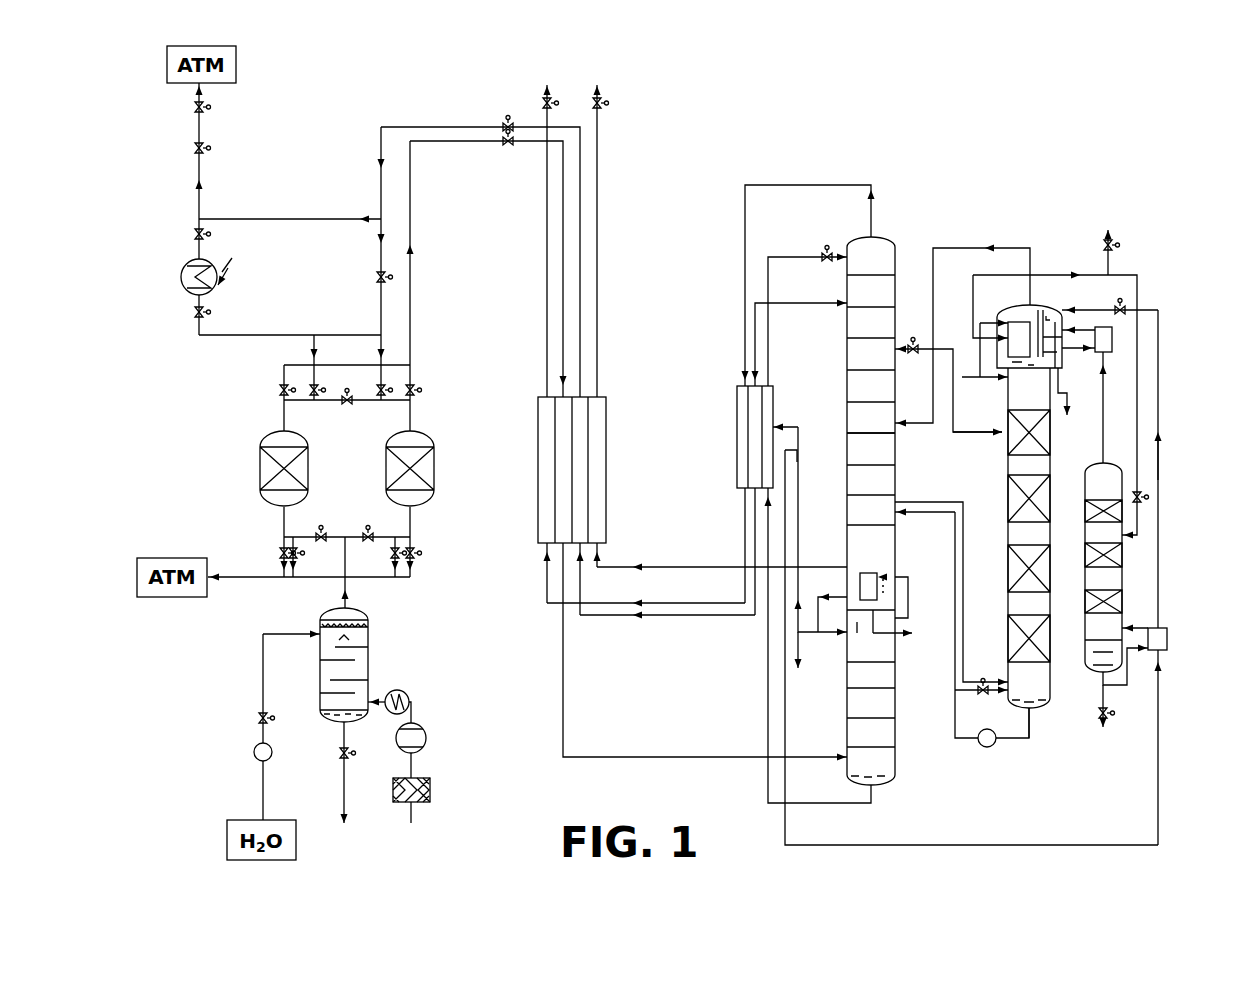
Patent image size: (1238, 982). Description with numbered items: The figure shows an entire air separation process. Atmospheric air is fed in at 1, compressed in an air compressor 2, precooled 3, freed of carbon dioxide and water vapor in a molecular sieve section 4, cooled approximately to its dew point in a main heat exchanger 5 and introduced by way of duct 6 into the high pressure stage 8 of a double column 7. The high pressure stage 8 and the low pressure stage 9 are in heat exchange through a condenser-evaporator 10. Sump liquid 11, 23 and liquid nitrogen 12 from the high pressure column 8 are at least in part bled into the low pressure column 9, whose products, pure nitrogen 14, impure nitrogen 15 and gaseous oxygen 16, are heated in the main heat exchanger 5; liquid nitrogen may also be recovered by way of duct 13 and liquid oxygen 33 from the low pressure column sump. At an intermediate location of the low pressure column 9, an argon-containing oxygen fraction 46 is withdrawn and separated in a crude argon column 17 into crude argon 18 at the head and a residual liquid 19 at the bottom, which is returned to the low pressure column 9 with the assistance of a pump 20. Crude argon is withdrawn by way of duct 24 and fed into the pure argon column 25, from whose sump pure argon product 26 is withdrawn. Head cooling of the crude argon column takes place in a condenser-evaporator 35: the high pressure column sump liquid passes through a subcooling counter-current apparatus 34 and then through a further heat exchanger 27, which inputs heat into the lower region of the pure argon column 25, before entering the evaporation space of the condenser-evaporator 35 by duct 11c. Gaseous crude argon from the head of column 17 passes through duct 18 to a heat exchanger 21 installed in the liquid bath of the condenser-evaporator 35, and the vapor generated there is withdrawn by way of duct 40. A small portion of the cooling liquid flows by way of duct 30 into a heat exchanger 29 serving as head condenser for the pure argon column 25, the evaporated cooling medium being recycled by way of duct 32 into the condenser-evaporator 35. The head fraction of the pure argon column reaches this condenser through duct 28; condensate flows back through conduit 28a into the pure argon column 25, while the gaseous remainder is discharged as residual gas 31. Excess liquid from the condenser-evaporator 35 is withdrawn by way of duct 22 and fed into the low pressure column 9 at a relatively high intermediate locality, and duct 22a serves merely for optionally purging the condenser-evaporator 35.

The air feed 1 is at (412, 808).
The air compressor 2 is at (427, 736).
The precooling 3 is at (368, 660).
The molecular sieve section 4 is at (347, 486).
The main heat exchanger 5 is at (538, 472).
The duct 6 is at (663, 757).
The double column 7 is at (845, 472).
The high pressure stage 8 is at (871, 719).
The low pressure stage 9 is at (871, 511).
The condenser-evaporator 10 is at (872, 572).
The sump liquid 11 is at (827, 803).
The duct 11c is at (958, 845).
The liquid nitrogen 12 is at (799, 528).
The duct 13 is at (800, 648).
The pure nitrogen 14 is at (872, 205).
The impure nitrogen 15 is at (814, 303).
The gaseous oxygen 16 is at (660, 567).
The crude argon column 17 is at (1003, 497).
The crude argon duct 18 is at (975, 343).
The residual liquid 19 is at (1030, 736).
The pump 20 is at (990, 746).
The heat exchanger 21 is at (1012, 326).
The duct 22 is at (1068, 432).
The duct 22a is at (1003, 436).
The sump liquid 23 is at (922, 345).
The duct 24 is at (972, 297).
The pure argon column 25 is at (1084, 560).
The pure argon product 26 is at (1106, 704).
The heat exchanger 27 is at (1168, 640).
The head fraction duct 28 is at (1103, 455).
The conduit 28a is at (1160, 458).
The heat exchanger 29 is at (1112, 342).
The duct 30 is at (1068, 350).
The residual gas 31 is at (1110, 268).
The duct 32 is at (1092, 303).
The liquid oxygen 33 is at (890, 638).
The subcooling counter-current apparatus 34 is at (737, 436).
The condenser-evaporator 35 is at (1048, 300).
The duct 40 is at (1003, 248).
The argon-containing oxygen fraction 46 is at (963, 590).